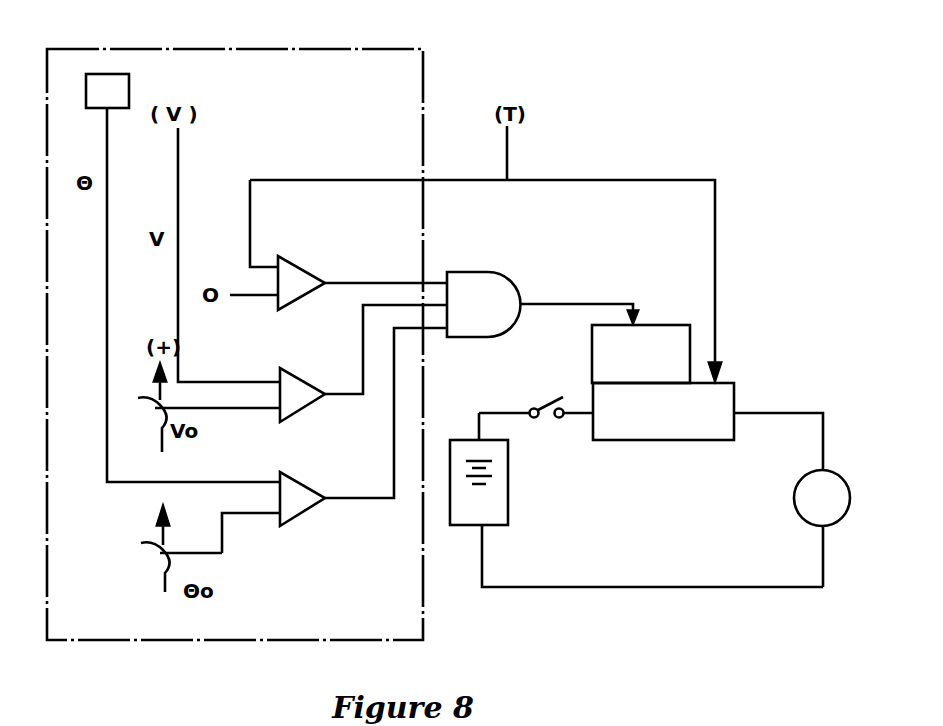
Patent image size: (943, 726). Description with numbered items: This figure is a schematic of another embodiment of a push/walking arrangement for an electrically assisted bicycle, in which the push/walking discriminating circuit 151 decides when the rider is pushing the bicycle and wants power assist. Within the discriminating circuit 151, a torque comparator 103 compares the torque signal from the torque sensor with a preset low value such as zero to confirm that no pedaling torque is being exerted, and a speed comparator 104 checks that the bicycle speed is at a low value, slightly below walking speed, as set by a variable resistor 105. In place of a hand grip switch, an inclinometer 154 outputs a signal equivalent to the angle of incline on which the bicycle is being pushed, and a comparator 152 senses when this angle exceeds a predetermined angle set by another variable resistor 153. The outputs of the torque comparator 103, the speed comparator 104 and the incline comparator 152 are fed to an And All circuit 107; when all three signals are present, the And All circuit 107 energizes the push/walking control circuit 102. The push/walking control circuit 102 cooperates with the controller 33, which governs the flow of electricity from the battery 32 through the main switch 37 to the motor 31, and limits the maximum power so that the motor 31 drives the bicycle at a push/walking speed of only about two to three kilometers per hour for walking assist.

The push/walking discriminating circuit 151 is at (426, 87).
The inclinometer 154 is at (130, 95).
The torque comparator 103 is at (297, 262).
The speed comparator 104 is at (303, 378).
The variable resistor 105 is at (170, 446).
The comparator 152 is at (298, 479).
The variable resistor 153 is at (148, 565).
The And All circuit 107 is at (492, 272).
The push/walking control circuit 102 is at (668, 323).
The controller 33 is at (695, 441).
The main switch 37 is at (548, 422).
The battery 32 is at (508, 506).
The motor 31 is at (794, 510).